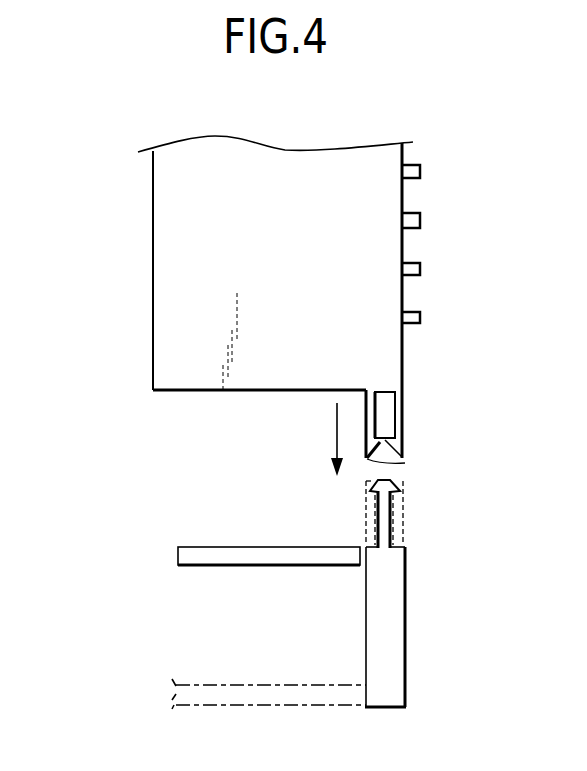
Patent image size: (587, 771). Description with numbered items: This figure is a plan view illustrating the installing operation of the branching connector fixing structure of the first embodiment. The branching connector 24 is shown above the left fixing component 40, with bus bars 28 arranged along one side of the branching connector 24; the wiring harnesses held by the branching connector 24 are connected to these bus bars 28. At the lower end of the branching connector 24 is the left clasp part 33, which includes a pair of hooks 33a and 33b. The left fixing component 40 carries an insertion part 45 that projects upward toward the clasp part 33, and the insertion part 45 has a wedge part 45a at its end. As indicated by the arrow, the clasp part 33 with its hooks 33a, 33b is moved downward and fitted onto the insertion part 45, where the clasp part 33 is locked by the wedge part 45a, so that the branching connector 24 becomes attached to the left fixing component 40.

The branching connector 24 is at (138, 263).
The bus bars 28 is at (420, 218).
The left clasp part 33 is at (398, 418).
The hook 33a is at (405, 463).
The hook 33b is at (405, 458).
The left fixing component 40 is at (420, 623).
The insertion part 45 is at (383, 513).
The wedge part 45a is at (371, 483).